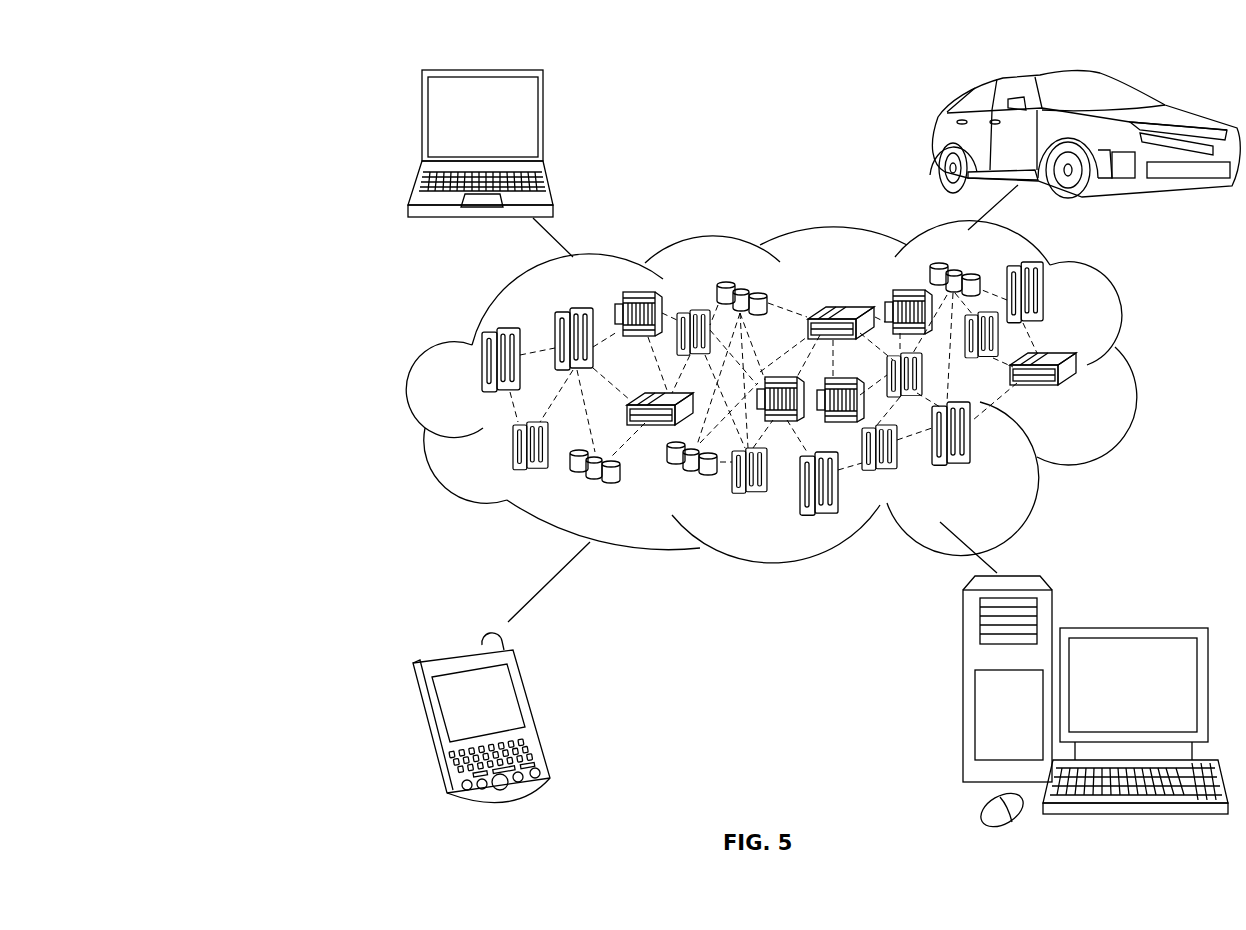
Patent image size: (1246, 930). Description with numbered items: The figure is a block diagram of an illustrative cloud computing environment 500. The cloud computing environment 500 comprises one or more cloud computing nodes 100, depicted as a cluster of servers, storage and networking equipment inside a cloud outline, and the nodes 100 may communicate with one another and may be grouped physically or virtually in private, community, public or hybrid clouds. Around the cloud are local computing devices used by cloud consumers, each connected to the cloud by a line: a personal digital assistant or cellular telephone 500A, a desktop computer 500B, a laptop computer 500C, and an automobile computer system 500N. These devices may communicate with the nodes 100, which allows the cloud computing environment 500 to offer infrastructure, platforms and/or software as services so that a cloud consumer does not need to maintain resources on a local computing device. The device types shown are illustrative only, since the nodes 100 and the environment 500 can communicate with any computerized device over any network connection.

The cloud computing environment 500 is at (308, 70).
The cloud computing nodes 100 is at (1084, 397).
The personal digital assistant (PDA) or cellular telephone 500A is at (537, 711).
The desktop computer 500B is at (1132, 627).
The laptop computer 500C is at (547, 123).
The automobile computer system 500N is at (935, 138).